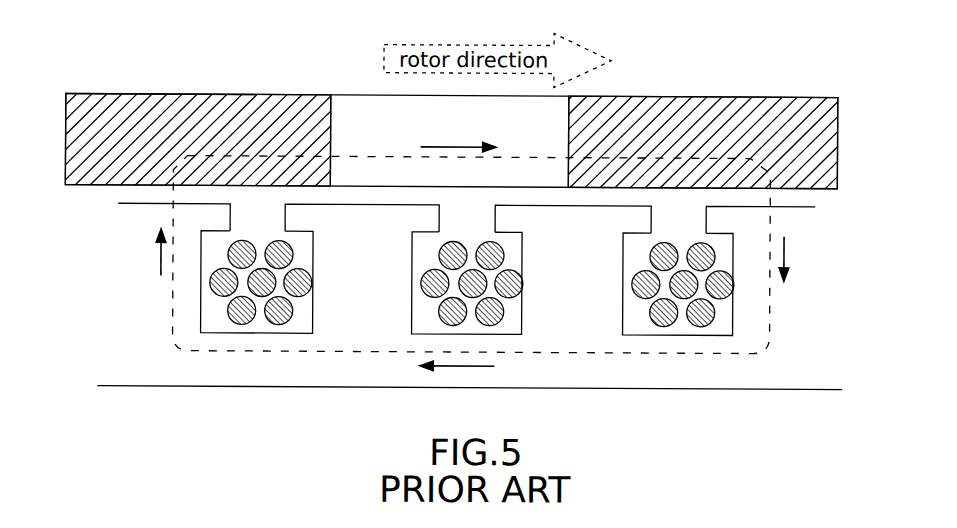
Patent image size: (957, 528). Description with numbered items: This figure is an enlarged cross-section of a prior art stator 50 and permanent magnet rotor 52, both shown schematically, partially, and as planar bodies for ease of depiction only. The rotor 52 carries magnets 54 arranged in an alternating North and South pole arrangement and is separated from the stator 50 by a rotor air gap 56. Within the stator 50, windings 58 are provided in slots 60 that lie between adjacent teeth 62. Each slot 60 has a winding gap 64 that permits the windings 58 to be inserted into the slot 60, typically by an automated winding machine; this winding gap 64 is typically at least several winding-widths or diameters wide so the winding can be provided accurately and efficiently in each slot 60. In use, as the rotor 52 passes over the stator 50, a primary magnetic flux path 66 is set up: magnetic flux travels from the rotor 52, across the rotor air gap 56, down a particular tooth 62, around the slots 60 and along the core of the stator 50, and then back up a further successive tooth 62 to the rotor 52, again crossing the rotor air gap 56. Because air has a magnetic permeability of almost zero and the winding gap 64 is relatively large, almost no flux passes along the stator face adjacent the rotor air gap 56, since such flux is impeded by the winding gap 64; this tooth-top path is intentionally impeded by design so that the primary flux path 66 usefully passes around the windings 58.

The stator 50 is at (794, 365).
The permanent magnet rotor 52 is at (793, 97).
The magnets 54 is at (108, 112).
The rotor air gap 56 is at (802, 197).
The windings 58 is at (313, 285).
The slots 60 is at (412, 264).
The teeth 62 is at (105, 304).
The winding gap 64 is at (244, 226).
The primary magnetic flux path 66 is at (662, 356).